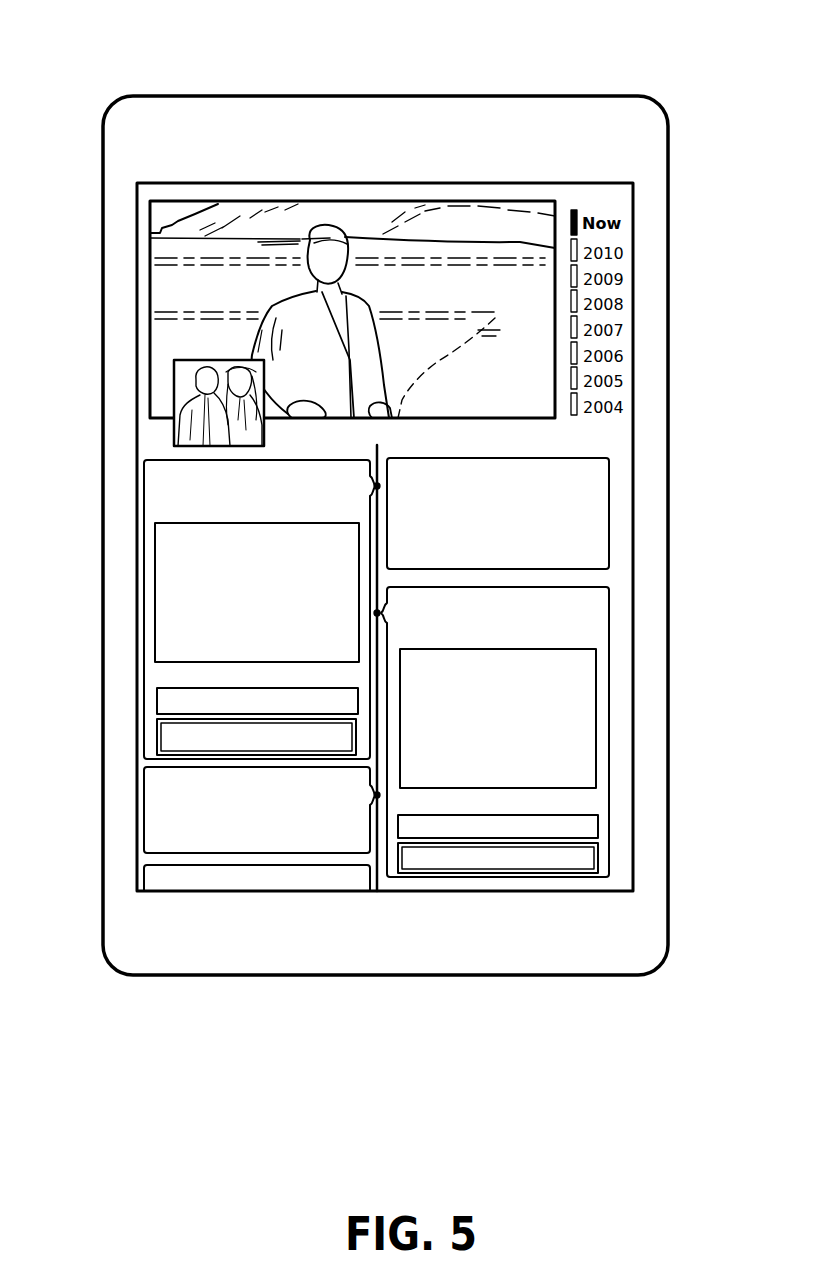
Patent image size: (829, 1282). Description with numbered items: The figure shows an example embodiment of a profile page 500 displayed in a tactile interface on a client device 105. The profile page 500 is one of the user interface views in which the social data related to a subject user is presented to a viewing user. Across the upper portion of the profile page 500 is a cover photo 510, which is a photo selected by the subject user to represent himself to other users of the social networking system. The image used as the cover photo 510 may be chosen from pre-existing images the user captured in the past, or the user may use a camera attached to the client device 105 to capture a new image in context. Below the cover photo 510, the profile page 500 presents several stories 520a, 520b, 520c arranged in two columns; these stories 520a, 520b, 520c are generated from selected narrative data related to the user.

The client device 105 is at (660, 95).
The profile page 500 is at (135, 178).
The cover photo 510 is at (349, 210).
The story 520a is at (158, 581).
The story 520b is at (602, 538).
The story 520c is at (600, 703).